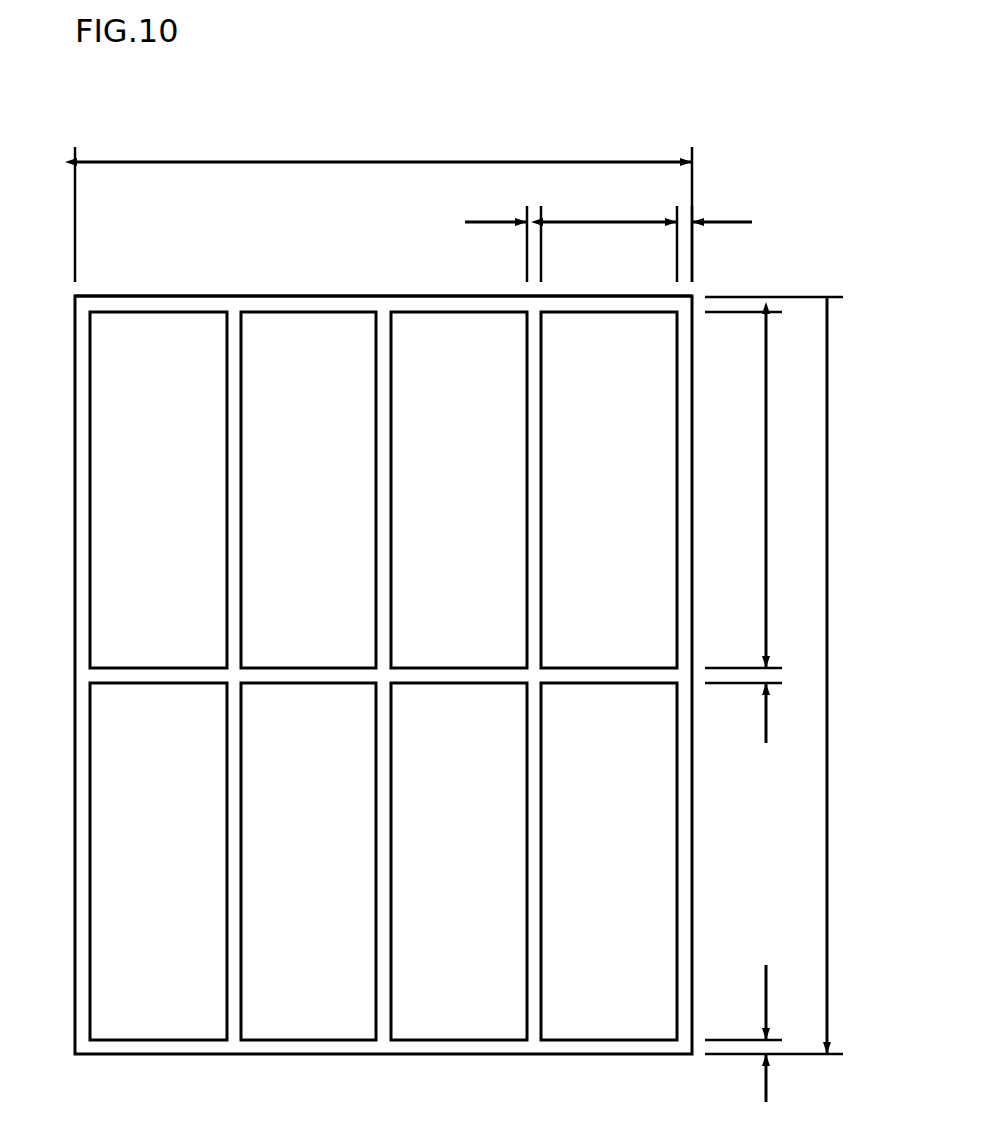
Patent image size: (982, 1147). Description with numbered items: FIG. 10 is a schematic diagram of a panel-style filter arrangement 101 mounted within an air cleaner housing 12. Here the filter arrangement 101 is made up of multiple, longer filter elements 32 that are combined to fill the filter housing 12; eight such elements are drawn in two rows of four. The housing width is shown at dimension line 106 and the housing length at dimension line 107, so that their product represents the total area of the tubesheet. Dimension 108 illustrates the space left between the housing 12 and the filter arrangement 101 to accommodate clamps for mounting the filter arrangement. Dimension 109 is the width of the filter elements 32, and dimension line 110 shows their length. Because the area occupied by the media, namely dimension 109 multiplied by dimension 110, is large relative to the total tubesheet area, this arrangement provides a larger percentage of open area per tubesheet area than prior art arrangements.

The air cleaner housing 12 is at (75, 514).
The filter elements 32 is at (383, 676).
The filter arrangement 101 is at (291, 294).
The dimension line 106 is at (284, 162).
The dimension line 107 is at (827, 575).
The dimension 108 is at (605, 654).
The dimension 109 is at (593, 225).
The dimension line 110 is at (766, 462).